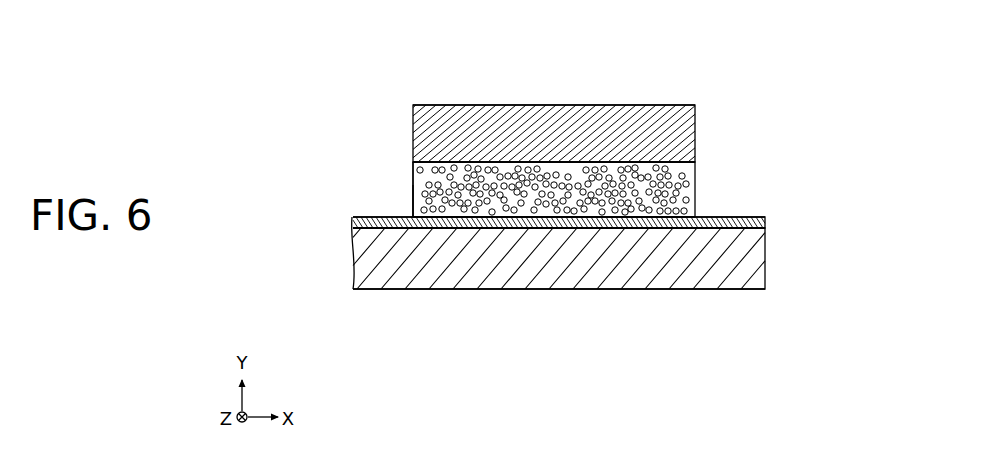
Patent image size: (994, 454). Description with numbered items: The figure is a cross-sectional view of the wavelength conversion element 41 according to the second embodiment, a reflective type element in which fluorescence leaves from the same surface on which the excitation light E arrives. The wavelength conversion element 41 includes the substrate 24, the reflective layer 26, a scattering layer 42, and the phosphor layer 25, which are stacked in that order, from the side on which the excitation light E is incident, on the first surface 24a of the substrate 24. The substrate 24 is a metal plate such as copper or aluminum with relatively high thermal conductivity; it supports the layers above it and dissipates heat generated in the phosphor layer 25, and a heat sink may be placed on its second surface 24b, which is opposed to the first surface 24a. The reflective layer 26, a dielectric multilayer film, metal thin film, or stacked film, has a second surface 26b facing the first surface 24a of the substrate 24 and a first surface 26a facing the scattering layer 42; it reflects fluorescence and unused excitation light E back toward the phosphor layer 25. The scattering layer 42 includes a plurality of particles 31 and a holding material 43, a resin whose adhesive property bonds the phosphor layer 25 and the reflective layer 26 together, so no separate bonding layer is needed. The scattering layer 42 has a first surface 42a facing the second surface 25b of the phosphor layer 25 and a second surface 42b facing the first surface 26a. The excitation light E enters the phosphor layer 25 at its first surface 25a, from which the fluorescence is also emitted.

The substrate 24 is at (752, 263).
The first surface of substrate 24a is at (383, 218).
The second surface of substrate 24b is at (382, 289).
The phosphor layer 25 is at (683, 132).
The first surface of phosphor layer 25a is at (694, 105).
The second surface of phosphor layer 25b is at (694, 170).
The reflective layer 26 is at (758, 223).
The first surface of reflective layer 26a is at (745, 218).
The second surface of reflective layer 26b is at (592, 228).
The particles 31 is at (413, 197).
The wavelength conversion element 41 is at (481, 92).
The scattering layer 42 is at (675, 188).
The first surface of scattering layer 42a is at (617, 162).
The second surface of scattering layer 42b is at (648, 219).
The holding material 43 is at (415, 175).
The excitation light E is at (555, 92).